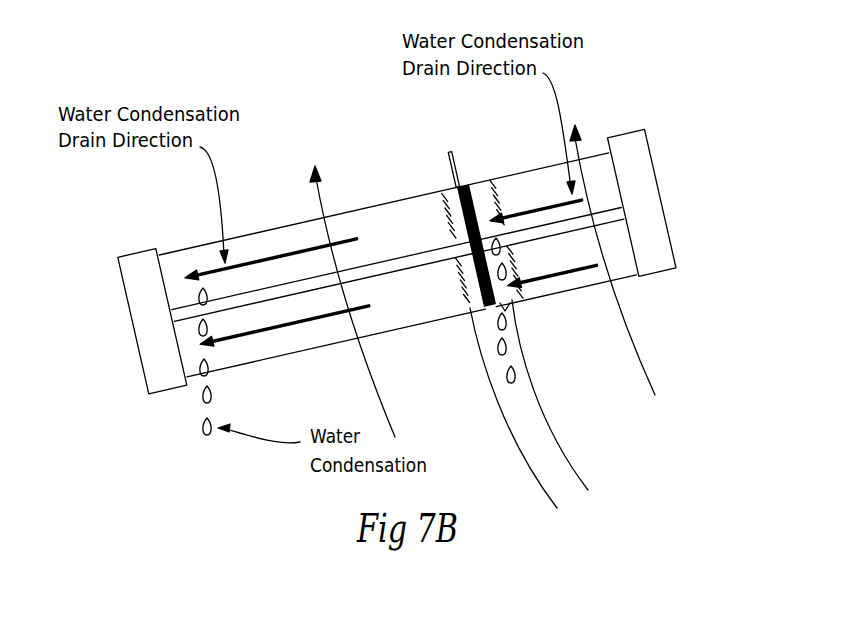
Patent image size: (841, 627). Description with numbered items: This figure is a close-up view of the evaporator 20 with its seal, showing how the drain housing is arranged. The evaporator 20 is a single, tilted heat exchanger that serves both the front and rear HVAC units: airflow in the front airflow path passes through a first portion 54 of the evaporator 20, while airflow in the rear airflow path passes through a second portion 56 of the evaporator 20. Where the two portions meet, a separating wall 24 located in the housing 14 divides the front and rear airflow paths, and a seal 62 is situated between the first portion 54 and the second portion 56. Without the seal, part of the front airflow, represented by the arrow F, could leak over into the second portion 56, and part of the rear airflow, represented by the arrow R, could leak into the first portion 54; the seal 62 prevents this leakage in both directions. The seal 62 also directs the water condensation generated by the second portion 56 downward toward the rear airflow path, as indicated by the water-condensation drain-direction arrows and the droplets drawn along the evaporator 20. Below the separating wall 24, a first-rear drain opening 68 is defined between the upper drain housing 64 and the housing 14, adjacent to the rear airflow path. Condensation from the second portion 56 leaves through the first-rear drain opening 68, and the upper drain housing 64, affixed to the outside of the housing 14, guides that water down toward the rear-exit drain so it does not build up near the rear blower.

The housing 14 is at (530, 404).
The evaporator 20 is at (127, 302).
The separating wall 24 is at (457, 168).
The first portion of the evaporator 54 is at (277, 227).
The second portion of the evaporator 56 is at (523, 171).
The seal 62 is at (448, 210).
The upper drain housing 64 is at (508, 442).
The first-rear drain opening 68 is at (499, 312).
The arrow F is at (358, 367).
The arrow R is at (650, 365).